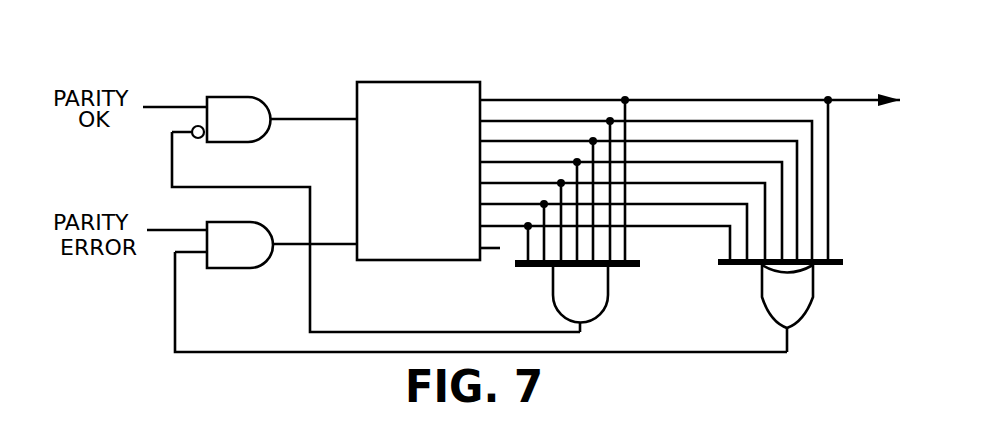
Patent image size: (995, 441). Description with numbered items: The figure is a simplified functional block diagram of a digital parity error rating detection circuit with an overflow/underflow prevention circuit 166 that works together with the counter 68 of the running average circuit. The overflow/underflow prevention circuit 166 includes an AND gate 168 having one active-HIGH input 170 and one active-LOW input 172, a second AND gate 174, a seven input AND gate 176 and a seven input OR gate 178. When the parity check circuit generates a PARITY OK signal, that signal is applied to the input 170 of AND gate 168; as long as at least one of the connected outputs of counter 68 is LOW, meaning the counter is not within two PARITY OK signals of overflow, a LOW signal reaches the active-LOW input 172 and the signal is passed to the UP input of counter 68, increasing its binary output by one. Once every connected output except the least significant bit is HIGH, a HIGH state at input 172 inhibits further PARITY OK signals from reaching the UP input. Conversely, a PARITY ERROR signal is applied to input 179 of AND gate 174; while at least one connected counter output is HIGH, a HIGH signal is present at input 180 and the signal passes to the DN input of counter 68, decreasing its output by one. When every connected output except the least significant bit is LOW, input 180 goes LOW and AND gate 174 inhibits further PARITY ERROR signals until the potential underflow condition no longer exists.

The counter 68 is at (437, 82).
The overflow/underflow prevention circuit 166 is at (673, 74).
The AND gate 168 is at (253, 97).
The active-HIGH input 170 is at (205, 103).
The active-LOW input 172 is at (198, 139).
The AND gate 174 is at (265, 269).
The seven input AND gate 176 is at (592, 300).
The seven input OR gate 178 is at (803, 297).
The input 179 is at (207, 222).
The input 180 is at (206, 269).